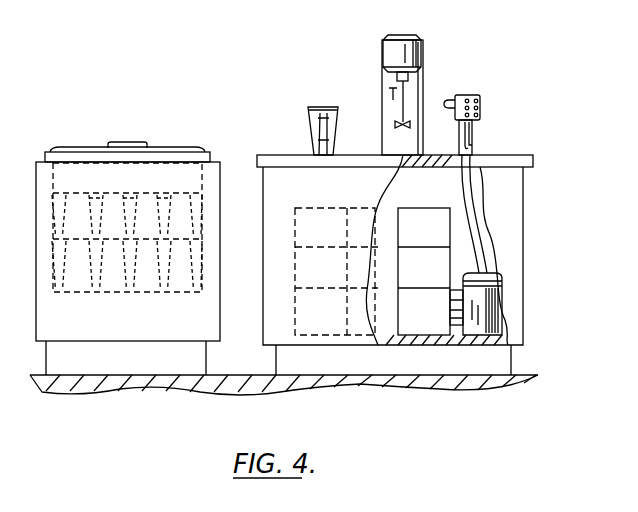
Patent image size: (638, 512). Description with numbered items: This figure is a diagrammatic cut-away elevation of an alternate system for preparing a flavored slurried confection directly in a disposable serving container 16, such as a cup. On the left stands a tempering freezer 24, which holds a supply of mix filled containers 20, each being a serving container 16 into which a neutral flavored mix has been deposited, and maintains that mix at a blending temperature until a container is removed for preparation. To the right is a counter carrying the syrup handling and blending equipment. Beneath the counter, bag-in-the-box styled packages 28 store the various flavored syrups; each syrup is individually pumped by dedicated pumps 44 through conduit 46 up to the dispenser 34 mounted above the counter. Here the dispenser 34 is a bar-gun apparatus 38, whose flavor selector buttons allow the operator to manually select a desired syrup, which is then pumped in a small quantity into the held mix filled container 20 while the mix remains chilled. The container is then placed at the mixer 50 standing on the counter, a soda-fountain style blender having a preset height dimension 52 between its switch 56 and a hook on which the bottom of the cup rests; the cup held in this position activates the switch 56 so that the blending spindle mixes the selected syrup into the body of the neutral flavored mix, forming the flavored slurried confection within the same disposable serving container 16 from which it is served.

The disposable serving container 16 is at (186, 266).
The mix filled container 20 is at (177, 209).
The tempering freezer 24 is at (100, 146).
The bag-in-the-box styled packages 28 is at (392, 250).
The dispenser 34 is at (448, 97).
The bar-gun apparatus 38 is at (491, 116).
The dedicated pumps 44 is at (482, 292).
The conduit 46 is at (470, 258).
The mixer 50 is at (386, 63).
The preset height dimension 52 is at (412, 88).
The switch 56 is at (393, 88).